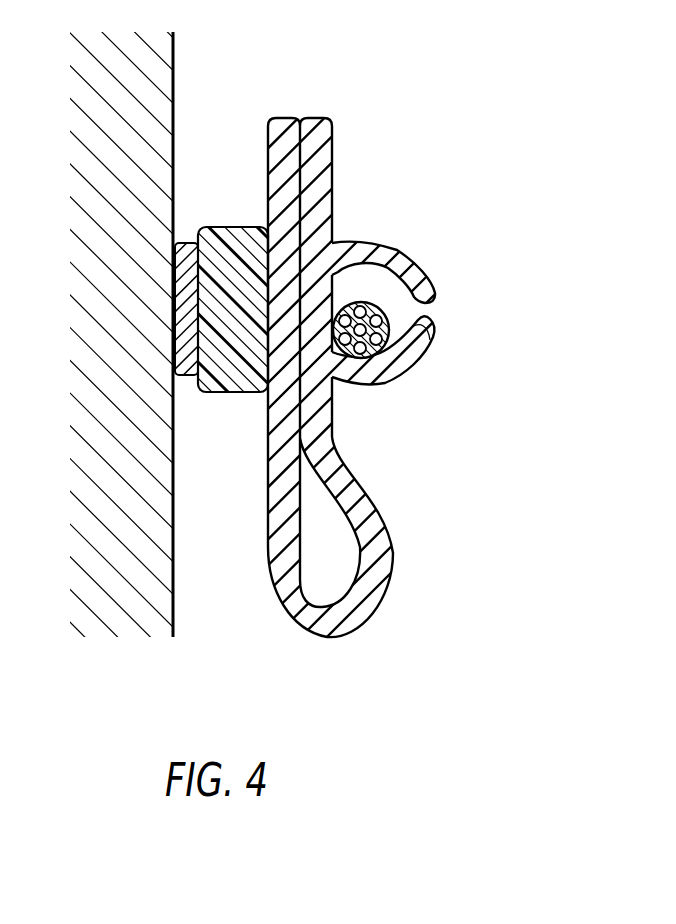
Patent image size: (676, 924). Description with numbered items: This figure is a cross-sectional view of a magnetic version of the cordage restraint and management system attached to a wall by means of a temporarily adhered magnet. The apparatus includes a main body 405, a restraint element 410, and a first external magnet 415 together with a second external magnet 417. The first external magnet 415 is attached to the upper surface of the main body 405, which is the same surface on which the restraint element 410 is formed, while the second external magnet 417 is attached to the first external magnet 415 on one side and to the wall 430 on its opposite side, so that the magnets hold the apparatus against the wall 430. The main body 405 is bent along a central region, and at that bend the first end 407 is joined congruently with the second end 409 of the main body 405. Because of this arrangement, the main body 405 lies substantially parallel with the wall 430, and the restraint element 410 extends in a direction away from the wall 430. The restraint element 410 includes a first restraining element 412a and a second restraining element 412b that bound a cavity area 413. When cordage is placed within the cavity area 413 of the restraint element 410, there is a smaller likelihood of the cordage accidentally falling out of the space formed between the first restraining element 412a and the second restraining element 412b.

The wall 430 is at (175, 44).
The second external magnet 417 is at (185, 243).
The first external magnet 415 is at (234, 395).
The second end 409 is at (281, 118).
The first end 407 is at (313, 118).
The main body 405 is at (382, 603).
The restraint element 410 is at (423, 277).
The first restraining element 412a is at (409, 255).
The second restraining element 412b is at (398, 378).
The cavity area 413 is at (405, 317).